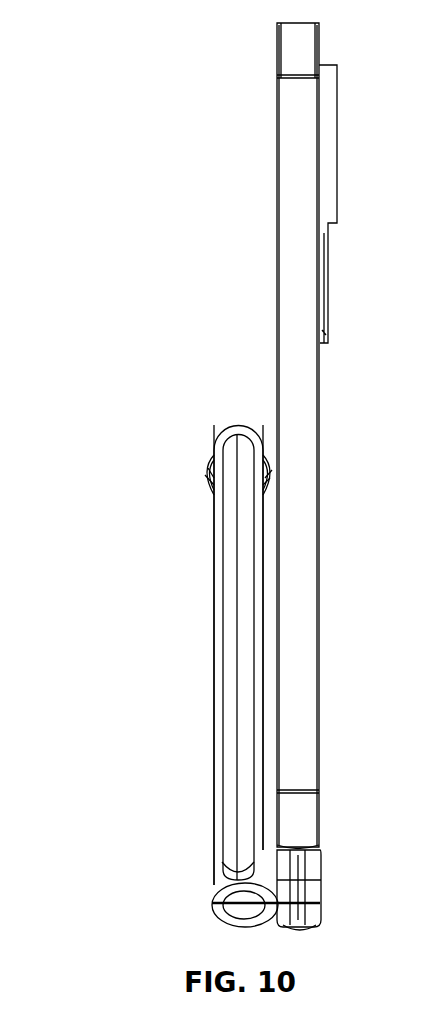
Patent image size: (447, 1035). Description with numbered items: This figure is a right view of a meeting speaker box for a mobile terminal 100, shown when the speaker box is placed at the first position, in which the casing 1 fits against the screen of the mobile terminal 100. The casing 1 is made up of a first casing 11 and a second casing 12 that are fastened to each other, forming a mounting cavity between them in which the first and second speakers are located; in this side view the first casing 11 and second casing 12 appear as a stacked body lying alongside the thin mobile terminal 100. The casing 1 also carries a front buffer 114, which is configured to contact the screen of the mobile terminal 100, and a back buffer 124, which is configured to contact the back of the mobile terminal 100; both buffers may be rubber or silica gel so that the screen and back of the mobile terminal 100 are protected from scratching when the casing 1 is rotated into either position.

The mobile terminal 100 is at (300, 175).
The casing 1 is at (105, 655).
The first casing 11 is at (250, 620).
The second casing 12 is at (220, 677).
The back buffer 124 is at (210, 478).
The front buffer 114 is at (265, 475).